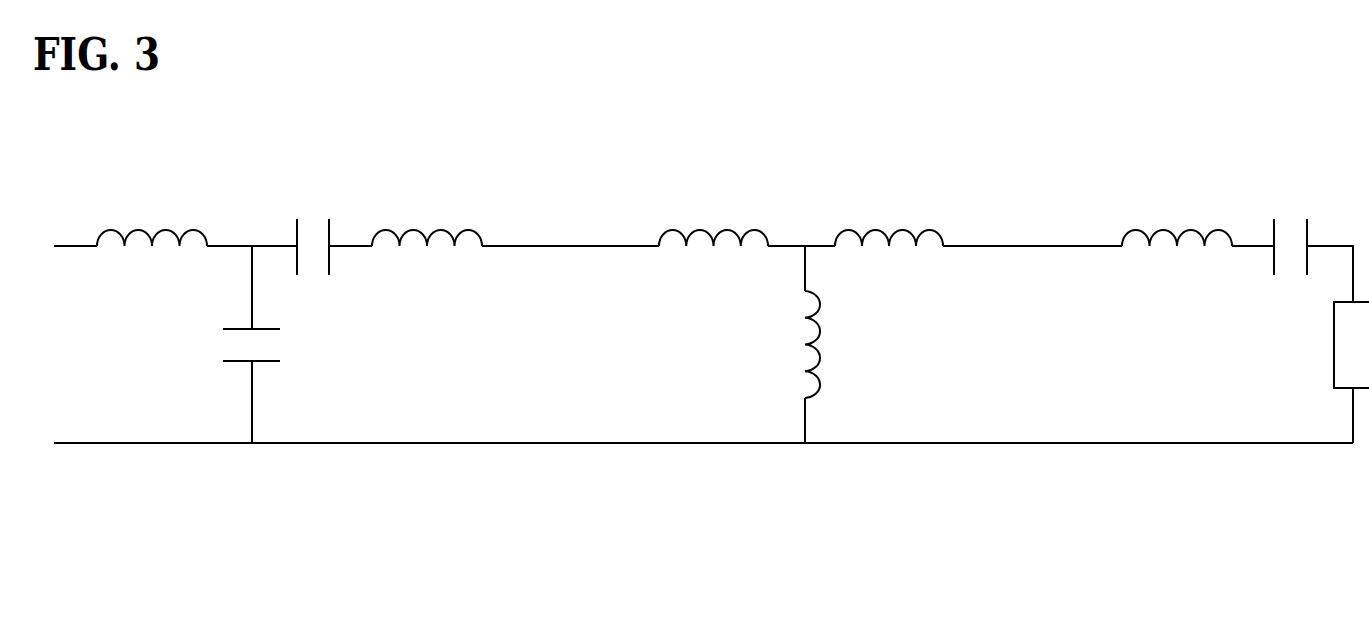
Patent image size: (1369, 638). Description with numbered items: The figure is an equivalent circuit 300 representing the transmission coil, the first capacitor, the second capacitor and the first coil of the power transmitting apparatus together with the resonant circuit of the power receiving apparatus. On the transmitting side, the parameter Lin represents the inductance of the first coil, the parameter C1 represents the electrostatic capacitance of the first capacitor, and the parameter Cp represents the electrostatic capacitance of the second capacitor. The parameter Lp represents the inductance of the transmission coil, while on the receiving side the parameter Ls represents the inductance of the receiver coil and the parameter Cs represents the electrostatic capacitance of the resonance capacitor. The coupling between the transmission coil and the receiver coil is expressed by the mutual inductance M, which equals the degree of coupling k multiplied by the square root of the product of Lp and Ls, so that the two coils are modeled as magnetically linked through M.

The equivalent circuit 300 is at (711, 383).
The inductance of the first coil Lin is at (152, 214).
The electrostatic capacitance of the first capacitor C1 is at (313, 229).
The inductance of the transmission coil Lp is at (427, 214).
The mutual inductance M is at (801, 313).
The inductance of the receiver coil Ls is at (1177, 214).
The electrostatic capacitance of the resonance capacitor Cs is at (1290, 229).
The electrostatic capacitance of the second capacitor Cp is at (270, 344).